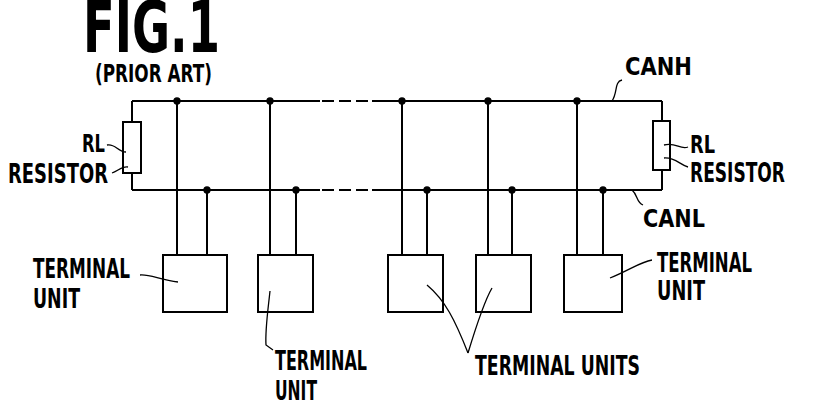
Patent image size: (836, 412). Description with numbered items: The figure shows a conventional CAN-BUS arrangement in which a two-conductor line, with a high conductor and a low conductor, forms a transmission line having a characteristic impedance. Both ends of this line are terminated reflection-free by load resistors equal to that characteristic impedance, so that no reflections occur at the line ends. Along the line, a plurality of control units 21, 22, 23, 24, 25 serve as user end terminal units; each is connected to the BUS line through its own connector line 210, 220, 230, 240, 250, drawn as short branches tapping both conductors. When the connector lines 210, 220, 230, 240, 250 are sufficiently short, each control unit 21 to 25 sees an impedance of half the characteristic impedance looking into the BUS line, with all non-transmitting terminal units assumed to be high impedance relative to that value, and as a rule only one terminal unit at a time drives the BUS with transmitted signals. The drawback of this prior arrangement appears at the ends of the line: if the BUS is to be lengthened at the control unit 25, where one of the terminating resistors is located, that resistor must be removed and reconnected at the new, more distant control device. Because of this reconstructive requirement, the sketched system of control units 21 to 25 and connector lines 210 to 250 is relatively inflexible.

The connector line 210 is at (176, 226).
The connector line 220 is at (270, 226).
The connector line 230 is at (402, 226).
The connector line 240 is at (488, 226).
The connector line 250 is at (577, 226).
The control unit 21 is at (195, 306).
The control unit 22 is at (285, 306).
The control unit 23 is at (413, 306).
The control unit 24 is at (497, 306).
The control unit 25 is at (595, 306).